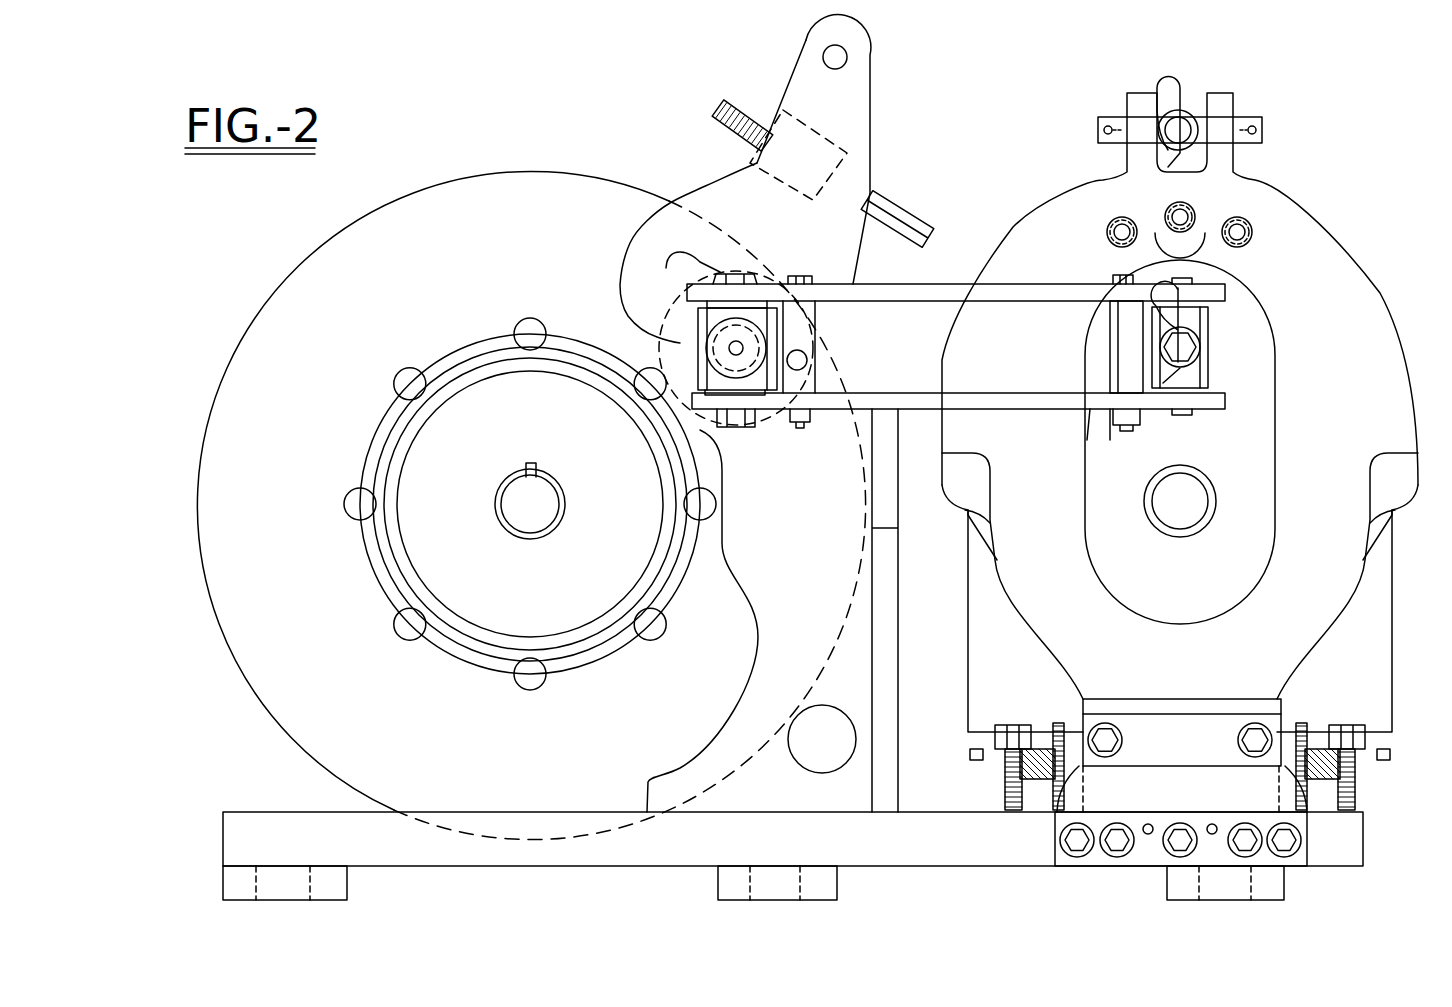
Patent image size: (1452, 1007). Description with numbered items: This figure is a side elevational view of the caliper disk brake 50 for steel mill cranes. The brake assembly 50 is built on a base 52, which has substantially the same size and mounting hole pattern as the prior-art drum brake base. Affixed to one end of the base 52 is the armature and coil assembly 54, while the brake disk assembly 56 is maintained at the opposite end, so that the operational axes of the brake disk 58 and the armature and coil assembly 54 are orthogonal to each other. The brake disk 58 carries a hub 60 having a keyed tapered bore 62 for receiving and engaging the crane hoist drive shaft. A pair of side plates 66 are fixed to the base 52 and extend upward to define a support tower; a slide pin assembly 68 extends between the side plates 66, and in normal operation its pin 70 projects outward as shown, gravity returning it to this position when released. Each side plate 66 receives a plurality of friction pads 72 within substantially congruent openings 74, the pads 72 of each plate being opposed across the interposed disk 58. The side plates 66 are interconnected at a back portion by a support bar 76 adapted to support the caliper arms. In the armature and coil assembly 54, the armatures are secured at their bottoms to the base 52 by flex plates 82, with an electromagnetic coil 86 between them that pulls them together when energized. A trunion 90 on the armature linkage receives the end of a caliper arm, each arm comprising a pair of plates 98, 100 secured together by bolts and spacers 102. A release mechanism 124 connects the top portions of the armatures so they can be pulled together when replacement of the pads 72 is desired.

The caliper disk brake 50 is at (320, 237).
The base 52 is at (280, 815).
The armature and coil assembly 54 is at (1296, 163).
The brake disk assembly 56 is at (574, 144).
The brake disk 58 is at (300, 268).
The hub 60 is at (430, 432).
The keyed tapered bore 62 is at (540, 497).
The side plates 66 is at (768, 622).
The slide pin assembly 68 is at (737, 100).
The pin 70 is at (895, 205).
The friction pads 72 is at (697, 260).
The openings 74 is at (667, 260).
The support bar 76 is at (893, 512).
The flex plates 82 is at (1205, 805).
The electromagnetic coil 86 is at (1030, 695).
The trunion 90 is at (1197, 375).
The caliper arm plate 98 is at (940, 290).
The caliper arm plate 100 is at (1003, 393).
The bolts and spacers 102 is at (817, 317).
The release mechanism 124 is at (1196, 68).